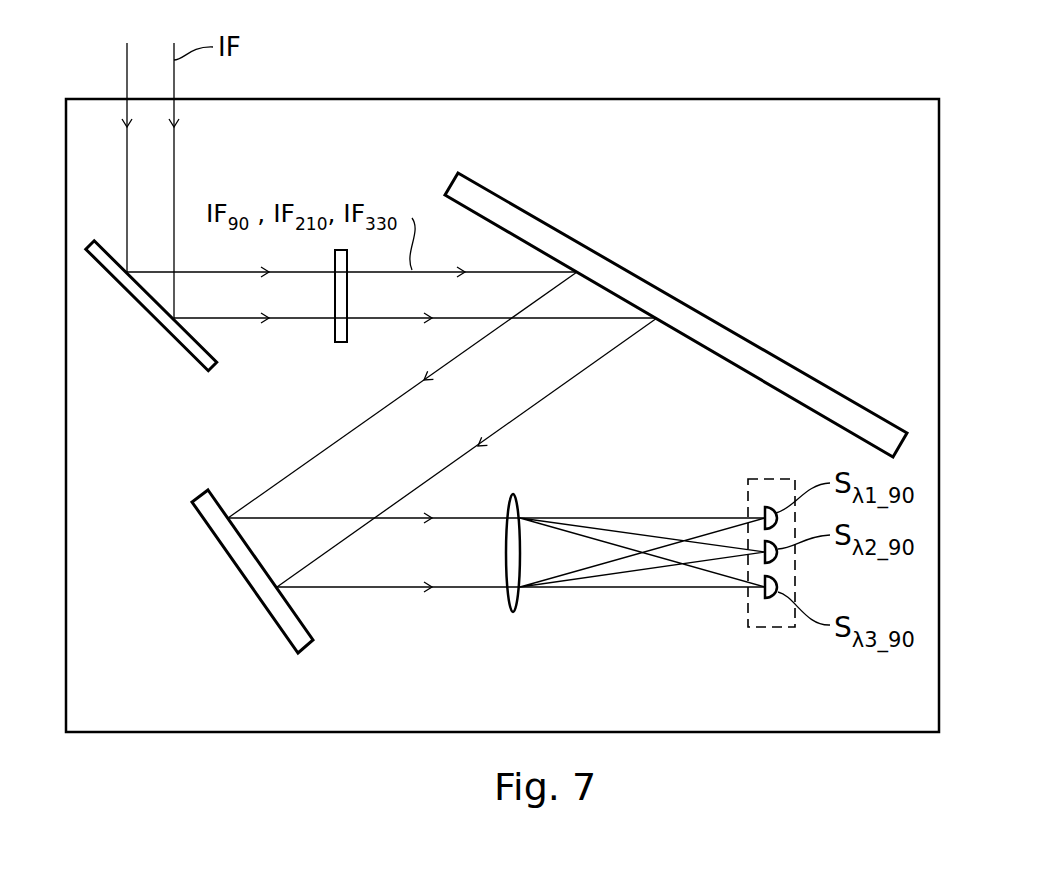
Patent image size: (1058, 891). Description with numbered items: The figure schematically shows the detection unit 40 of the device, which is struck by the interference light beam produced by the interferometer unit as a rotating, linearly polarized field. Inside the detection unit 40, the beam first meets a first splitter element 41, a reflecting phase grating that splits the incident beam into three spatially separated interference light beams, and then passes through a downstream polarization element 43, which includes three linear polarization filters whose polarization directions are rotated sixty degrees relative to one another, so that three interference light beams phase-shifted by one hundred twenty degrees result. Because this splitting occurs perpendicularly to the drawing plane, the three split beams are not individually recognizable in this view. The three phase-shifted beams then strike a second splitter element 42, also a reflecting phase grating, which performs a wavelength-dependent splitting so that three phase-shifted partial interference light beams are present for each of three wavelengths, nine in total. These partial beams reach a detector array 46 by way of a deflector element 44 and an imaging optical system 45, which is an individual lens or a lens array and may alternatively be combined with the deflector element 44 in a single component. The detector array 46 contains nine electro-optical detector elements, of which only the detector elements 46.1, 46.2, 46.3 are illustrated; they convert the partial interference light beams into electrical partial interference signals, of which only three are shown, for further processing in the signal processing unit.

The detection unit 40 is at (826, 108).
The first splitter element 41 is at (147, 302).
The second splitter element 42 is at (738, 340).
The polarization element 43 is at (335, 338).
The deflector element 44 is at (240, 557).
The imaging optical system 45 is at (505, 600).
The detector array 46 is at (783, 555).
The detector element 46.1 is at (770, 508).
The detector element 46.2 is at (778, 556).
The detector element 46.3 is at (770, 598).